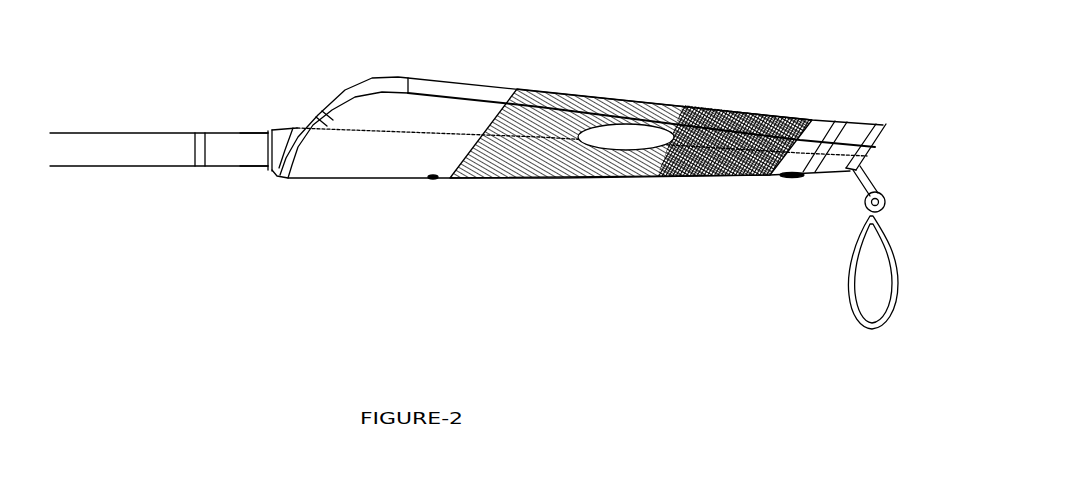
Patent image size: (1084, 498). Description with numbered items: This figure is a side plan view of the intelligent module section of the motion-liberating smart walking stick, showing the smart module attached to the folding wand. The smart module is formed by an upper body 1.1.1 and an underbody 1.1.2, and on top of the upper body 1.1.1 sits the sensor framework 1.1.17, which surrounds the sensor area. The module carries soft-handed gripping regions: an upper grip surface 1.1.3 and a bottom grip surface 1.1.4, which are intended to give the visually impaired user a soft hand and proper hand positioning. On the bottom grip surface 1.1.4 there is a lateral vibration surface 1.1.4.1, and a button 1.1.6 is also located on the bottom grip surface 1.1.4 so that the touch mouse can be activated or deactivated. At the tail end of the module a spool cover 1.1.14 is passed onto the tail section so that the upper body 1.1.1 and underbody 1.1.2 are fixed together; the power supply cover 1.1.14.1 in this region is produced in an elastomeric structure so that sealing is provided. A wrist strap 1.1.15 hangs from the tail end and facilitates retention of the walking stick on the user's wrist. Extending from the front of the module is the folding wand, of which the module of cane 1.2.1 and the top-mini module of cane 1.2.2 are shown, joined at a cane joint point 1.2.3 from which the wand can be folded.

The upper body 1.1.1 is at (473, 93).
The underbody 1.1.2 is at (360, 163).
The upper grip surface 1.1.3 is at (683, 110).
The bottom grip surface 1.1.4 is at (703, 158).
The lateral vibration surface 1.1.4.1 is at (620, 137).
The button 1.1.6 is at (433, 177).
The spool cover 1.1.14 is at (880, 120).
The power supply cover 1.1.14.1 is at (810, 173).
The wrist strap 1.1.15 is at (860, 320).
The sensor framework 1.1.17 is at (370, 87).
The module of cane 1.2.1 is at (87, 152).
The top-mini module of cane 1.2.2 is at (252, 140).
The cane joint point 1.2.3 is at (197, 165).